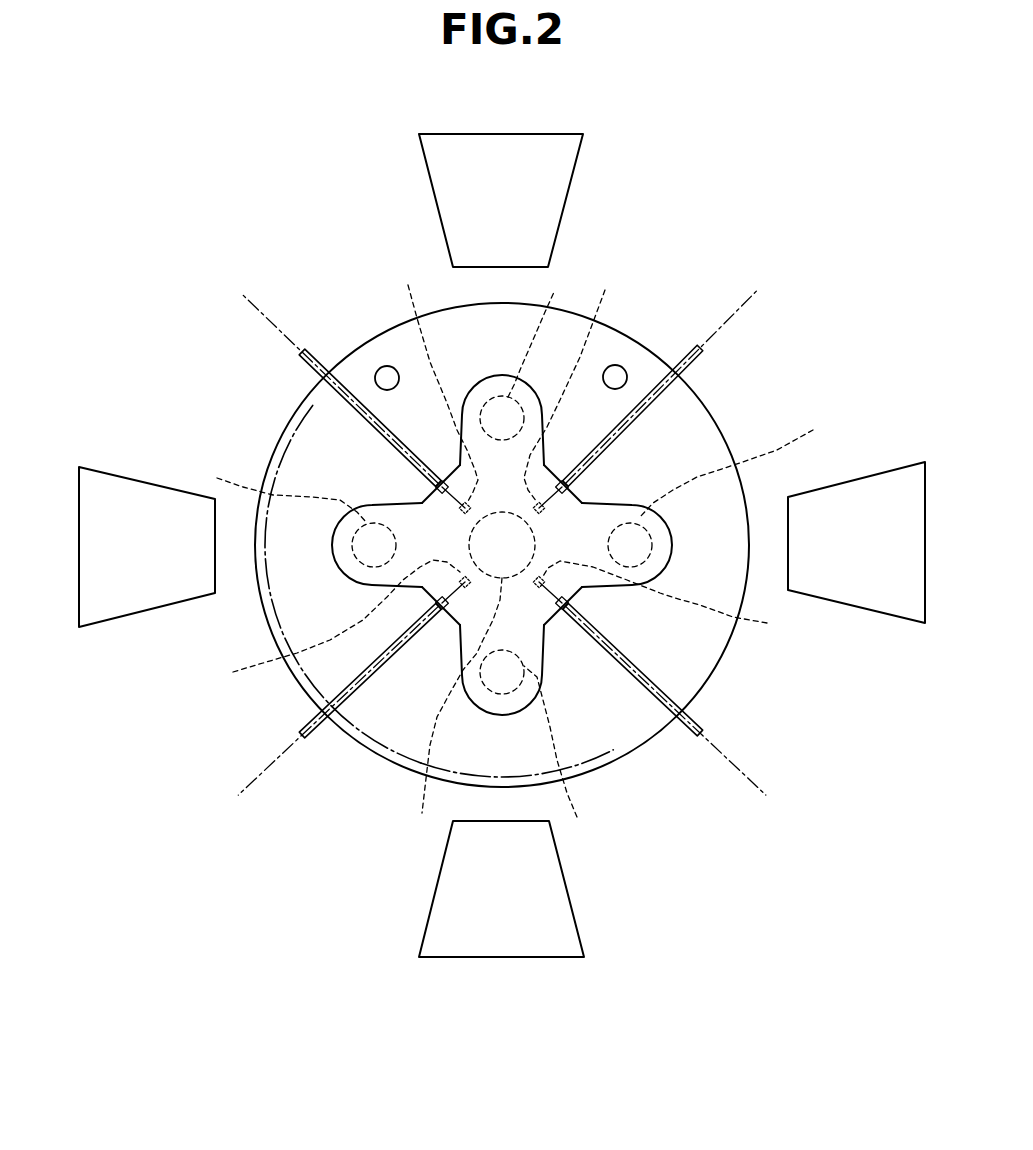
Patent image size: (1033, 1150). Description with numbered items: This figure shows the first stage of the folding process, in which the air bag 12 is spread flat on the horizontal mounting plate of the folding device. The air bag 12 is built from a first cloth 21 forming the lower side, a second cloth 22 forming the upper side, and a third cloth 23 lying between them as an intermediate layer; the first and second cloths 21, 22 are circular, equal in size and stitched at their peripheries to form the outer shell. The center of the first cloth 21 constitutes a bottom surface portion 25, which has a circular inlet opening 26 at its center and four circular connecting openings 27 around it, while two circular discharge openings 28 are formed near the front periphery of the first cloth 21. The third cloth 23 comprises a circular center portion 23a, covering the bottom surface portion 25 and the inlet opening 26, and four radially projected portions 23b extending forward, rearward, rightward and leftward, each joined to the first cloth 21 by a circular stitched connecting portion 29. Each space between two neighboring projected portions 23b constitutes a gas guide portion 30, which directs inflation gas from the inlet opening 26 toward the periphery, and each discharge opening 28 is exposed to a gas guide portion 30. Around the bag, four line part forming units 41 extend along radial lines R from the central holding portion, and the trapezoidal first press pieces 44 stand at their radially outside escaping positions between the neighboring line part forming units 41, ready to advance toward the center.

The air bag 12 is at (502, 514).
The first cloth 21 is at (548, 753).
The second cloth 22 is at (343, 597).
The third cloth 23 is at (577, 545).
The circular center portion 23a is at (357, 501).
The radially projected portions 23b is at (533, 515).
The bottom surface portion 25 is at (601, 477).
The inlet opening 26 is at (452, 710).
The connecting openings 27 is at (501, 467).
The discharge openings 28 is at (482, 336).
The stitched connecting portions 29 is at (511, 551).
The gas guide portion 30 is at (561, 538).
The line part forming units 41 is at (524, 526).
The first press pieces 44 is at (506, 545).
The radial lines R is at (505, 526).